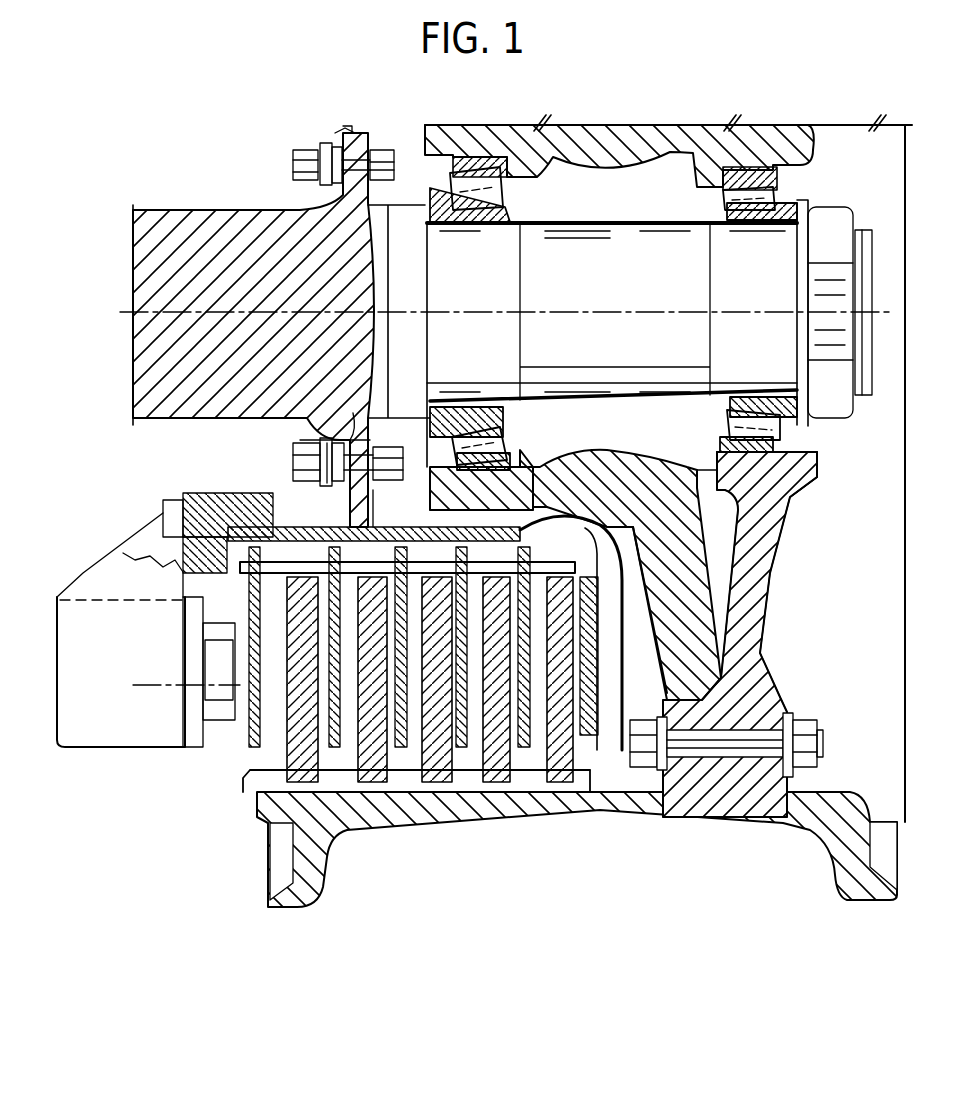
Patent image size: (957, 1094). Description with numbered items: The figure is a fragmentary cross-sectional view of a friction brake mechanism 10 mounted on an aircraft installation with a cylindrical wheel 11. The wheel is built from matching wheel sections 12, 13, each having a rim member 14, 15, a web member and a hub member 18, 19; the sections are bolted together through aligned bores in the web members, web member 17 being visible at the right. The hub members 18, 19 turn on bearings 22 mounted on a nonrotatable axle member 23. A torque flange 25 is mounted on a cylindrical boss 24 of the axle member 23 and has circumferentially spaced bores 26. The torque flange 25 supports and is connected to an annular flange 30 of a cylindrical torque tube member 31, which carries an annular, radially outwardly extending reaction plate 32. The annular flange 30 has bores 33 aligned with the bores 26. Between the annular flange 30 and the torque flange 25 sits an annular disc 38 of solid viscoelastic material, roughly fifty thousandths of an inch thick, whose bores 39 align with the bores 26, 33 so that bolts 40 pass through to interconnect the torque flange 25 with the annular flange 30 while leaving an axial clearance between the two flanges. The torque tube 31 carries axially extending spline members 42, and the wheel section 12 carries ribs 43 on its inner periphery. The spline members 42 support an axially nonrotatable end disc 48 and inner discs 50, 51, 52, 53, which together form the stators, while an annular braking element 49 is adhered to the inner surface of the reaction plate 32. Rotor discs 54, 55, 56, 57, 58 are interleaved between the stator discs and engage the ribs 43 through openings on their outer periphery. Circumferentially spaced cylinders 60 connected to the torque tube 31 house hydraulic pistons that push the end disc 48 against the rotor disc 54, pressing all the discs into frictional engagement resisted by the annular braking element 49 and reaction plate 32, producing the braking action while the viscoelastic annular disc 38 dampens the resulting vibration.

The friction brake mechanism 10 is at (212, 800).
The cylindrical wheel 11 is at (622, 828).
The wheel section 12 is at (475, 822).
The wheel section 13 is at (792, 822).
The rim member 14 is at (305, 900).
The rim member 15 is at (857, 895).
The web member 17 is at (755, 613).
The hub member 18 is at (606, 463).
The hub member 19 is at (797, 472).
The bearings 22 is at (505, 436).
The axle member 23 is at (632, 306).
The cylindrical boss 24 is at (384, 262).
The torque flange 25 is at (335, 135).
The bores 26 is at (300, 455).
The annular flange 30 is at (355, 417).
The torque tube member 31 is at (322, 535).
The reaction plate 32 is at (606, 638).
The bores 33 is at (338, 440).
The annular disc 38 is at (343, 135).
The bores 39 is at (384, 506).
The bolts 40 is at (295, 157).
The spline members 42 is at (488, 548).
The ribs 43 is at (405, 780).
The end disc 48 is at (247, 597).
The annular braking element 49 is at (600, 700).
The inner disc 50 is at (312, 565).
The inner disc 51 is at (395, 565).
The inner disc 52 is at (455, 565).
The inner disc 53 is at (532, 565).
The rotor disc 54 is at (272, 822).
The rotor disc 55 is at (370, 820).
The rotor disc 56 is at (440, 820).
The rotor disc 57 is at (505, 820).
The rotor disc 58 is at (565, 820).
The cylinders 60 is at (210, 652).